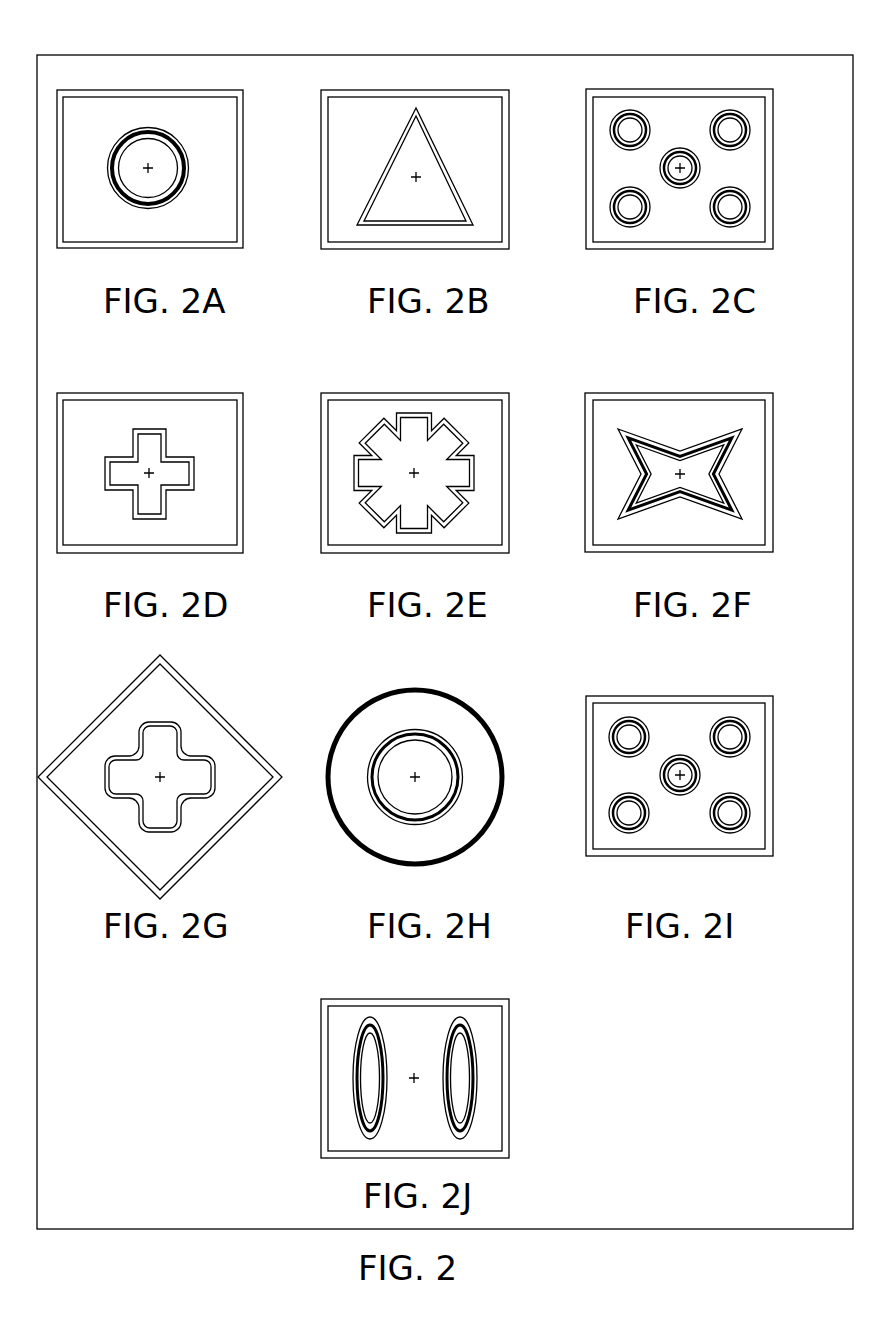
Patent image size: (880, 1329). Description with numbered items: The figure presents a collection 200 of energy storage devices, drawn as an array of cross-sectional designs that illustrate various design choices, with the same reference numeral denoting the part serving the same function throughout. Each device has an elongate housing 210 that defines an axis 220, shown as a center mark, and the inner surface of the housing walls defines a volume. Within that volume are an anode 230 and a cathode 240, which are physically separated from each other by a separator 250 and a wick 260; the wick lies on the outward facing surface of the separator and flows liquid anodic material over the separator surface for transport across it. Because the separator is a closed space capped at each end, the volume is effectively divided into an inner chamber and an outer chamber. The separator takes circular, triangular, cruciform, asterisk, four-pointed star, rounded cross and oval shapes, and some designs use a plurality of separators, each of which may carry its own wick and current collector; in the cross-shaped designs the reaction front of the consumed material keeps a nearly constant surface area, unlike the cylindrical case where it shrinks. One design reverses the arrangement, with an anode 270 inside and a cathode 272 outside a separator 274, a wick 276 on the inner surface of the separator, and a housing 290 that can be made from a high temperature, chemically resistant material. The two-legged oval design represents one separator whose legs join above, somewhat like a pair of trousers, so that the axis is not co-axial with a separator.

In FIG. 2, the collection 200 is at (138, 37).
In FIG. 2A, the elongate housing 210 is at (195, 90).
In FIG. 2B, the elongate housing 210 is at (460, 90).
In FIG. 2C, the elongate housing 210 is at (725, 90).
In FIG. 2D, the elongate housing 210 is at (195, 393).
In FIG. 2E, the elongate housing 210 is at (460, 393).
In FIG. 2F, the elongate housing 210 is at (725, 393).
In FIG. 2G, the elongate housing 210 is at (173, 665).
In FIG. 2H, the elongate housing 210 is at (413, 683).
In FIG. 2J, the elongate housing 210 is at (467, 999).
In FIG. 2A, the axis 220 is at (153, 165).
In FIG. 2B, the axis 220 is at (420, 170).
In FIG. 2C, the axis 220 is at (698, 160).
In FIG. 2D, the axis 220 is at (153, 468).
In FIG. 2E, the axis 220 is at (420, 470).
In FIG. 2F, the axis 220 is at (688, 467).
In FIG. 2G, the axis 220 is at (160, 775).
In FIG. 2H, the axis 220 is at (415, 777).
In FIG. 2I, the axis 220 is at (698, 763).
In FIG. 2J, the axis 220 is at (414, 1075).
In FIG. 2A, the anode 230 is at (302, 151).
In FIG. 2B, the anode 230 is at (568, 151).
In FIG. 2C, the anode 230 is at (837, 211).
In FIG. 2D, the anode 230 is at (302, 487).
In FIG. 2E, the anode 230 is at (568, 472).
In FIG. 2F, the anode 230 is at (837, 472).
In FIG. 2G, the anode 230 is at (230, 803).
In FIG. 2H, the anode 230 is at (485, 773).
In FIG. 2J, the anode 230 is at (567, 1036).
In FIG. 2A, the cathode 240 is at (168, 180).
In FIG. 2B, the cathode 240 is at (435, 190).
In FIG. 2C, the cathode 240 is at (730, 202).
In FIG. 2D, the cathode 240 is at (175, 472).
In FIG. 2E, the cathode 240 is at (458, 468).
In FIG. 2F, the cathode 240 is at (713, 445).
In FIG. 2G, the cathode 240 is at (197, 773).
In FIG. 2H, the cathode 240 is at (438, 760).
In FIG. 2J, the cathode 240 is at (462, 1073).
In FIG. 2A, the separator 250 is at (188, 188).
In FIG. 2B, the separator 250 is at (463, 203).
In FIG. 2C, the separator 250 is at (743, 213).
In FIG. 2D, the separator 250 is at (163, 498).
In FIG. 2E, the separator 250 is at (472, 483).
In FIG. 2F, the separator 250 is at (733, 495).
In FIG. 2G, the separator 250 is at (177, 823).
In FIG. 2H, the separator 250 is at (445, 812).
In FIG. 2J, the separator 250 is at (470, 1088).
In FIG. 2A, the wick 260 is at (170, 202).
In FIG. 2C, the wick 260 is at (735, 225).
In FIG. 2F, the wick 260 is at (718, 513).
In FIG. 2H, the wick 260 is at (453, 798).
In FIG. 2J, the wick 260 is at (465, 1130).
In FIG. 2I, the anode 270 is at (730, 812).
In FIG. 2I, the cathode 272 is at (833, 729).
In FIG. 2I, the separator 274 is at (743, 817).
In FIG. 2I, the wick 276 is at (735, 825).
In FIG. 2I, the housing 290 is at (732, 696).